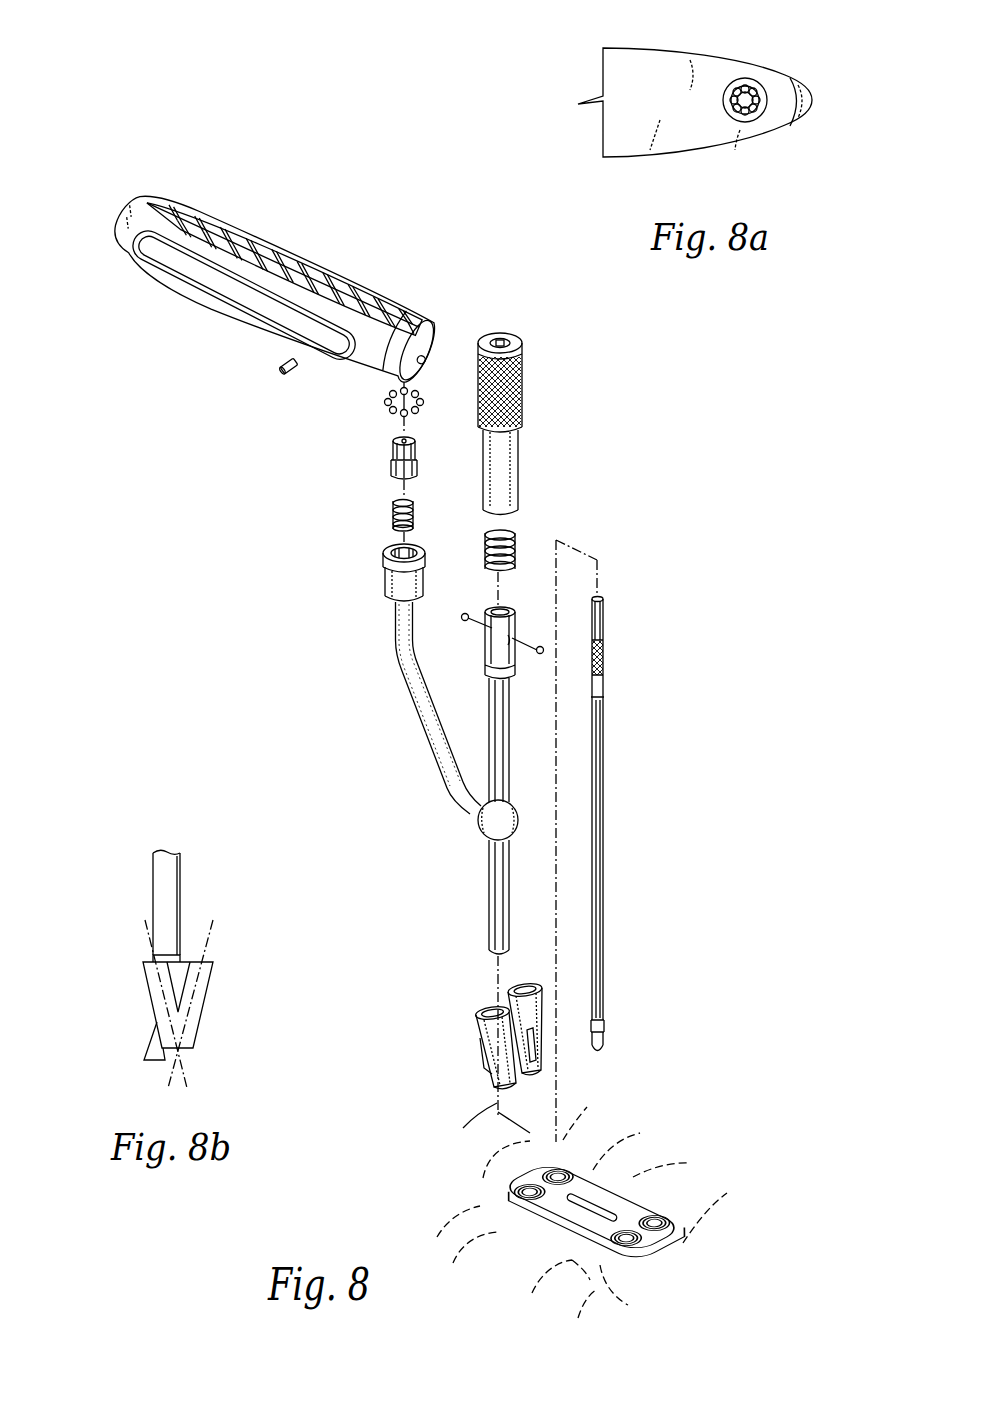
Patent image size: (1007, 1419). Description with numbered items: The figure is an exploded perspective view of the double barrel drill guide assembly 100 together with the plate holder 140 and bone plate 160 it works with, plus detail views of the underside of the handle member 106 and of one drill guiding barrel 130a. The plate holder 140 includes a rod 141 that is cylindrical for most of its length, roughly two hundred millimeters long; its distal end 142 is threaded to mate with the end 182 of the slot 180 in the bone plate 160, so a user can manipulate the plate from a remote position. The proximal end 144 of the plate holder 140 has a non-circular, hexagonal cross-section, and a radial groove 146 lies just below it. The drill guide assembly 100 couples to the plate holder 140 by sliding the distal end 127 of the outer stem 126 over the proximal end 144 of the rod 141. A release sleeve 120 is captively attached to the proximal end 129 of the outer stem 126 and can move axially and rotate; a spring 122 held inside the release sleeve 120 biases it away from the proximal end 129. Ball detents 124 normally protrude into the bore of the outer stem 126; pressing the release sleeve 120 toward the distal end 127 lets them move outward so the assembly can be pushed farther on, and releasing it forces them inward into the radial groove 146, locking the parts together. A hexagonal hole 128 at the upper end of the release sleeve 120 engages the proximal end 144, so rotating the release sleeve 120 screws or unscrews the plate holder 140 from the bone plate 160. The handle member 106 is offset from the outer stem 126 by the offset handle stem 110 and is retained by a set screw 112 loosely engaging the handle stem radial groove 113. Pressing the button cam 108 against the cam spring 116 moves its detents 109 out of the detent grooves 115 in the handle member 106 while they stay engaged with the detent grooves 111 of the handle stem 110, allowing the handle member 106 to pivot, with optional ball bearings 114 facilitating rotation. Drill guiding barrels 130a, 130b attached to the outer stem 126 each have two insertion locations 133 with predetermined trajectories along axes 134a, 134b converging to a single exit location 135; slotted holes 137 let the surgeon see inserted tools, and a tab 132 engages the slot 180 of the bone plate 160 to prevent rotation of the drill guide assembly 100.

In FIG. 8, the drill guide assembly 100 is at (148, 520).
In FIG. 8, the handle member 106 is at (313, 236).
In FIG. 8A, the handle member 106 is at (683, 49).
In FIG. 8, the button cam 108 is at (361, 464).
In FIG. 8, the detents 109 is at (390, 470).
In FIG. 8, the offset handle stem 110 is at (408, 697).
In FIG. 8, the detent grooves 111 is at (388, 551).
In FIG. 8, the set screw 112 is at (279, 382).
In FIG. 8, the handle stem radial groove 113 is at (370, 552).
In FIG. 8, the ball bearings 114 is at (428, 409).
In FIG. 8A, the detent grooves 115 is at (758, 86).
In FIG. 8, the cam spring 116 is at (418, 505).
In FIG. 8, the release sleeve 120 is at (541, 392).
In FIG. 8, the spring 122 is at (516, 533).
In FIG. 8, the ball detents 124 is at (464, 611).
In FIG. 8, the outer stem 126 is at (481, 816).
In FIG. 8B, the outer stem 126 is at (151, 876).
In FIG. 8, the distal end 127 is at (486, 952).
In FIG. 8, the hole 128 is at (523, 333).
In FIG. 8, the proximal end 129 is at (512, 609).
In FIG. 8, the drill guiding barrel 130a is at (461, 1068).
In FIG. 8B, the drill guiding barrel 130a is at (149, 1005).
In FIG. 8, the drill guiding barrel 130b is at (588, 1000).
In FIG. 8, the tab 132 is at (478, 1083).
In FIG. 8B, the tab 132 is at (146, 1048).
In FIG. 8, the insertion locations 133 is at (520, 977).
In FIG. 8B, the axis 134a is at (149, 939).
In FIG. 8B, the axis 134b is at (208, 938).
In FIG. 8, the exit location 135 is at (492, 1090).
In FIG. 8, the slotted holes 137 is at (533, 1040).
In FIG. 8, the plate holder 140 is at (645, 811).
In FIG. 8, the rod 141 is at (606, 877).
In FIG. 8, the distal end 142 is at (610, 1046).
In FIG. 8, the proximal end 144 is at (608, 603).
In FIG. 8, the radial groove 146 is at (608, 676).
In FIG. 8, the bone plate 160 is at (556, 1238).
In FIG. 8, the slot 180 is at (603, 1208).
In FIG. 8, the end 182 is at (562, 1196).